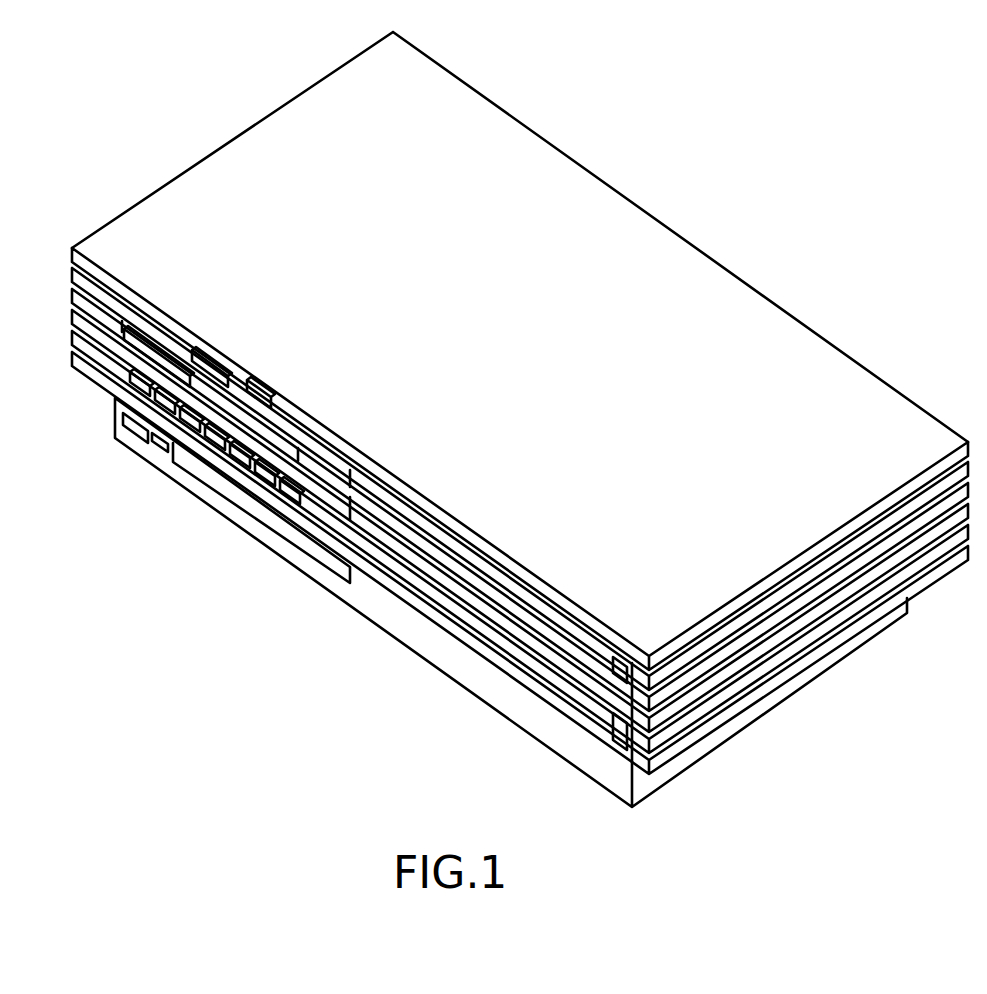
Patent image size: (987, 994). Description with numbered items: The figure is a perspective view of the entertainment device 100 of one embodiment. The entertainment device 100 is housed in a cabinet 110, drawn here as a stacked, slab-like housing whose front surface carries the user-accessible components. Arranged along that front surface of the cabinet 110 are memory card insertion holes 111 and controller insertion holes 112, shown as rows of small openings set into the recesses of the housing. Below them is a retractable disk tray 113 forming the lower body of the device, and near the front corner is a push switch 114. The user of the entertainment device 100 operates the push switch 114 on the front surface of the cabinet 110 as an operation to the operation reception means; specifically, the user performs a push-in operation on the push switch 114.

The entertainment device 100 is at (686, 149).
The cabinet 110 is at (636, 243).
The memory card insertion holes 111 is at (243, 405).
The controller insertion holes 112 is at (207, 478).
The retractable disk tray 113 is at (438, 578).
The push switch 114 is at (620, 660).